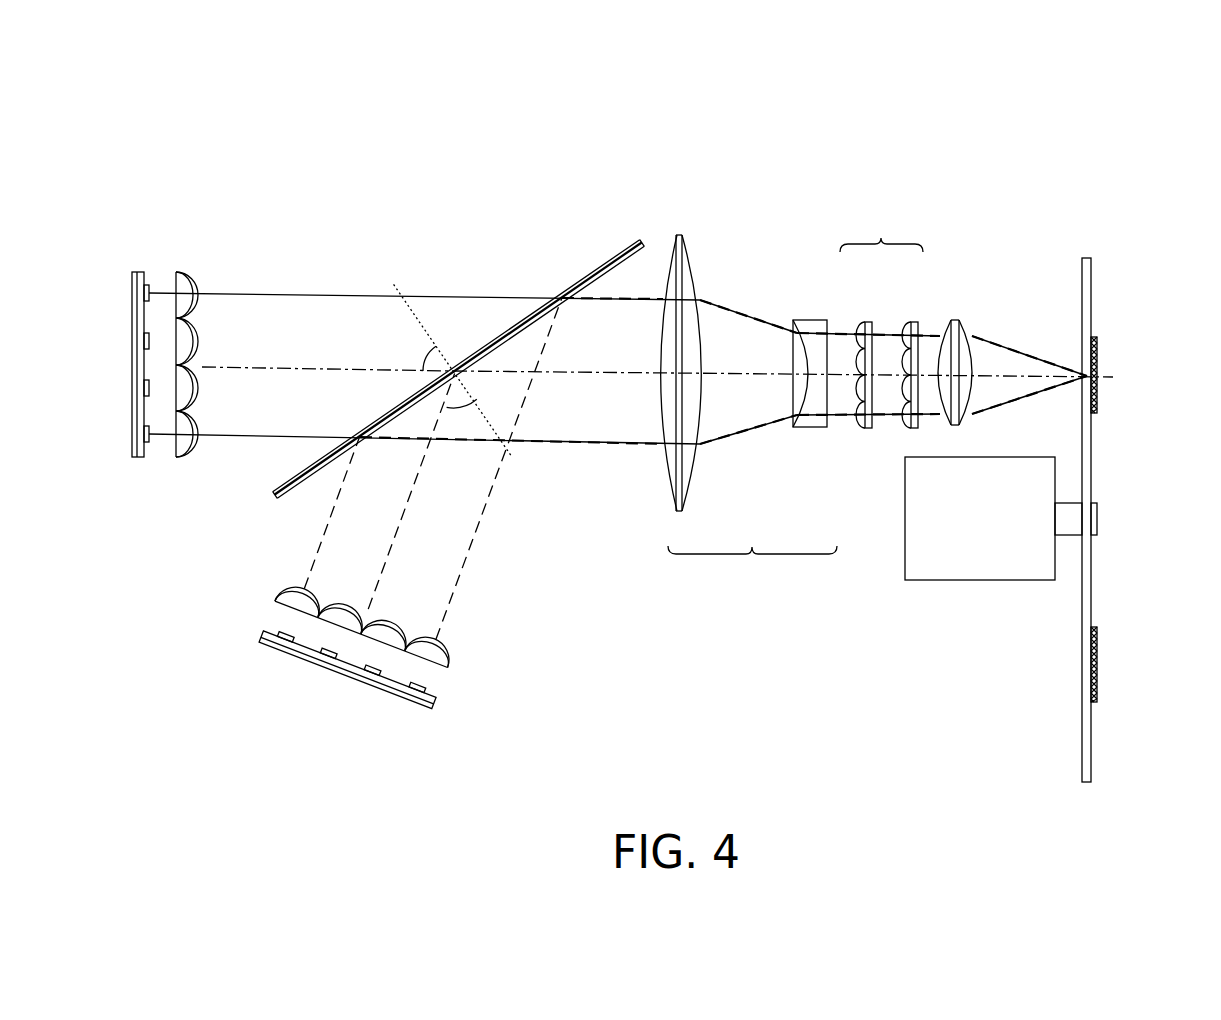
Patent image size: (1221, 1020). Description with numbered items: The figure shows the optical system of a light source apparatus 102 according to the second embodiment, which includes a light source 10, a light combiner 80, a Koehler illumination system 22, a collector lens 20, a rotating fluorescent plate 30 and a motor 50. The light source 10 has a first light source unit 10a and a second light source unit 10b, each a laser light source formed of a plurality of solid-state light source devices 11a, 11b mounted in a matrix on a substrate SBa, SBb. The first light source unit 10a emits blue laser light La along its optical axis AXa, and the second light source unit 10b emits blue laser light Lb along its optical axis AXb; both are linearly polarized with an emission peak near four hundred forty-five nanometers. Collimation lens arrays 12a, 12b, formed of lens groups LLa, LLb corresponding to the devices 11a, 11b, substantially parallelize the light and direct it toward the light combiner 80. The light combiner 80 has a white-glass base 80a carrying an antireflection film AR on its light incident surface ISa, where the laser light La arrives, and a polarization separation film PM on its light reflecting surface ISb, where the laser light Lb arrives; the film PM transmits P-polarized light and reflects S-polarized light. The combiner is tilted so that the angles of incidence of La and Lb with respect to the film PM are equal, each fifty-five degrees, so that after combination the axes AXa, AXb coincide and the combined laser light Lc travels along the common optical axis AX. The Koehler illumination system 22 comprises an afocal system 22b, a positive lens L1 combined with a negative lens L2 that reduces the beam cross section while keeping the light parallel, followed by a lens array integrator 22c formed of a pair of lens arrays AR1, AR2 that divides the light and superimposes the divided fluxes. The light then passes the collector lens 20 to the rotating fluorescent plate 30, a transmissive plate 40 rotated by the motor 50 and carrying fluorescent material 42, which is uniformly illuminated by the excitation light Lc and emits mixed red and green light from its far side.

The light source apparatus 102 is at (393, 128).
The light source 10 is at (253, 176).
The first light source unit 10a is at (195, 360).
The second light source unit 10b is at (343, 642).
The collimation lens array 12a is at (219, 345).
The collimation lens array 12b is at (357, 605).
The solid-state light source devices 11a is at (149, 392).
The solid-state light source devices 11b is at (385, 667).
The substrate SBa is at (135, 460).
The substrate SBb is at (433, 700).
The lens groups LLa is at (200, 445).
The lens groups LLb is at (405, 628).
The laser light La is at (294, 292).
The laser light Lb is at (460, 556).
The combined laser light Lc is at (632, 440).
The optical axis AXa is at (254, 365).
The optical axis AXb is at (420, 478).
The optical axis AX is at (718, 376).
The light combiner 80 is at (459, 347).
The base 80a is at (581, 279).
The polarization separation film PM is at (448, 408).
The light incident surface ISa is at (523, 312).
The light reflecting surface ISb is at (413, 414).
The antireflection film AR is at (507, 340).
The Koehler illumination system 22 is at (793, 361).
The afocal system 22b is at (749, 403).
The lens array integrator 22c is at (882, 316).
The positive lens L1 is at (692, 275).
The negative lens L2 is at (808, 320).
The lens array AR1 is at (867, 320).
The lens array AR2 is at (914, 320).
The collector lens 20 is at (967, 327).
The plate 40 is at (1086, 297).
The fluorescent material 42 is at (1098, 373).
The rotating fluorescent plate 30 is at (1063, 520).
The motor 50 is at (957, 572).